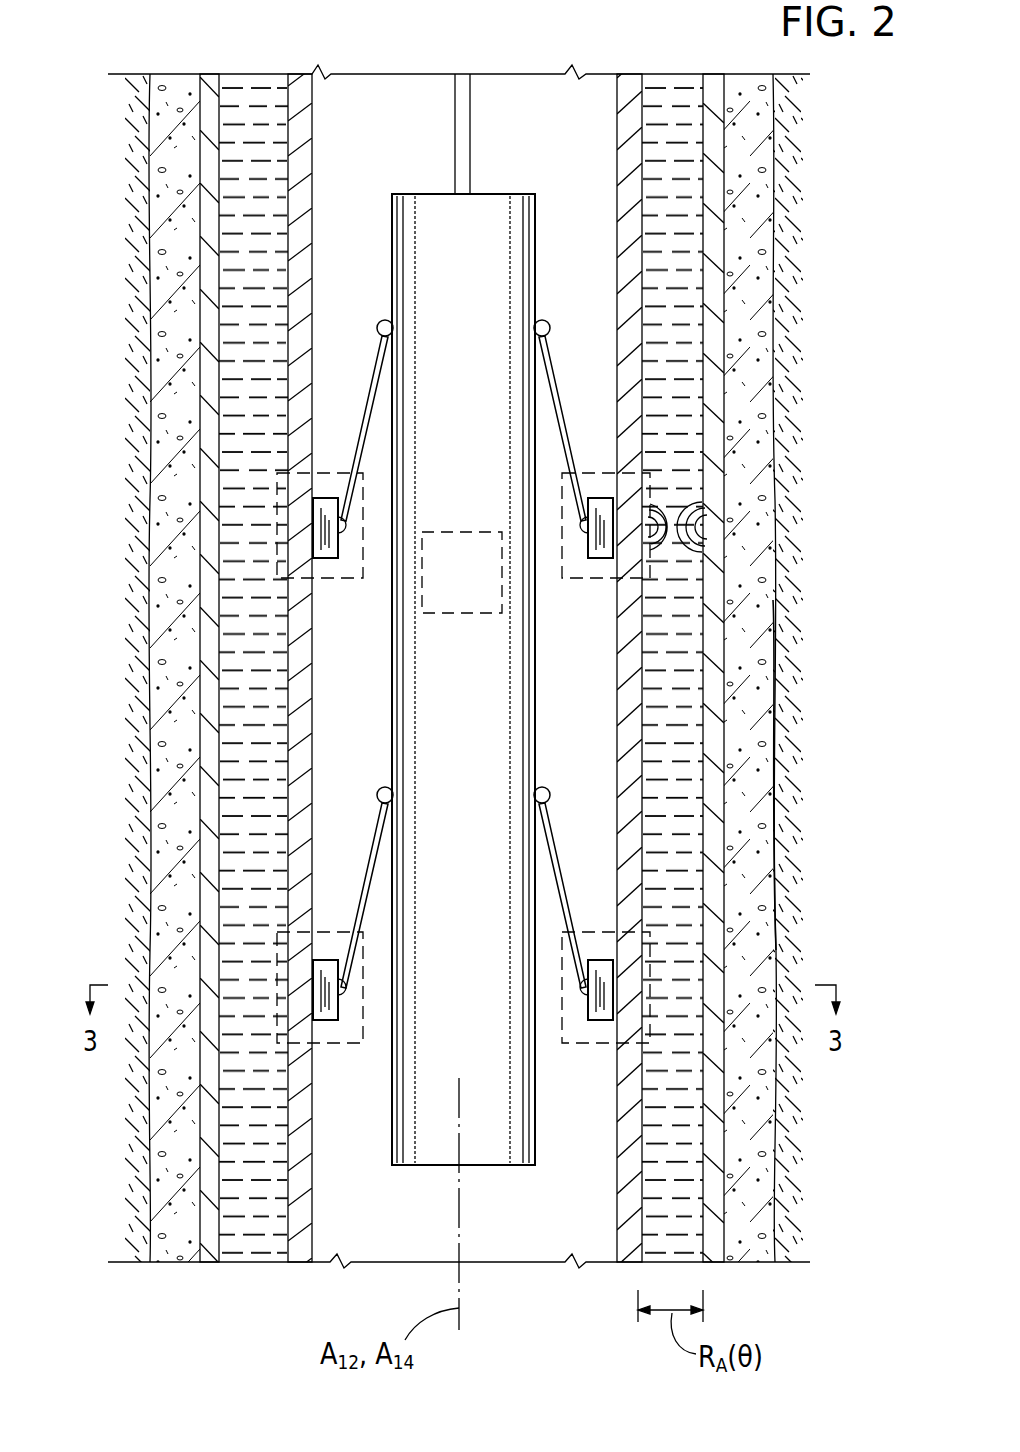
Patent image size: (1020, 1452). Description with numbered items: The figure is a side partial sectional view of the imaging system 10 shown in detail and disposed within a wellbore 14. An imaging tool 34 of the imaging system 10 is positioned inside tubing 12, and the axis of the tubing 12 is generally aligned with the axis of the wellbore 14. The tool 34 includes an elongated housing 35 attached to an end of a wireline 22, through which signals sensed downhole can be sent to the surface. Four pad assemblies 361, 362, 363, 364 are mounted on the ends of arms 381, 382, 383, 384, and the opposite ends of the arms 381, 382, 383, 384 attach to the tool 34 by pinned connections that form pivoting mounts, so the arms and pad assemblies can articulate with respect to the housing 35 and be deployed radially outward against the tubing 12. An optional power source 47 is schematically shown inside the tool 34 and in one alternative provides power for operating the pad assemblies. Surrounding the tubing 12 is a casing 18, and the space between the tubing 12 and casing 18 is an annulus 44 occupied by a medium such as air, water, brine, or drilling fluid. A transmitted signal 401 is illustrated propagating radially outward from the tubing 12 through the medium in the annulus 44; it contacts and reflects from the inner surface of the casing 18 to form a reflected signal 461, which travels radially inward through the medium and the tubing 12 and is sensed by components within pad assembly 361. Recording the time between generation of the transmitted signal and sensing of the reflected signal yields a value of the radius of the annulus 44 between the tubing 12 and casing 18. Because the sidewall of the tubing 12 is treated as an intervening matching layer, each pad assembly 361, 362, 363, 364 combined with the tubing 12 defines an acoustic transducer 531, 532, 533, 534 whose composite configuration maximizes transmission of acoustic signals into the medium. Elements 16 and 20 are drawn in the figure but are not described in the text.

The imaging system 10 is at (198, 60).
The tubing 12 is at (630, 140).
The wellbore 14 is at (236, 1275).
The formation 16 is at (790, 262).
The casing 18 is at (722, 735).
The cement 20 is at (745, 300).
The wireline 22 is at (468, 141).
The imaging tool 34 is at (524, 227).
The elongated housing 35 is at (478, 720).
The pad assembly 361 is at (604, 558).
The pad assembly 362 is at (318, 535).
The pad assembly 363 is at (612, 1023).
The pad assembly 364 is at (318, 1021).
The arm 381 is at (552, 372).
The arm 382 is at (373, 370).
The arm 383 is at (552, 840).
The arm 384 is at (373, 840).
The transmitted signal 401 is at (672, 552).
The annulus 44 is at (680, 228).
The reflected signal 461 is at (700, 495).
The power source 47 is at (458, 532).
The acoustic transducer 531 is at (650, 482).
The acoustic transducer 532 is at (277, 488).
The acoustic transducer 533 is at (652, 955).
The acoustic transducer 534 is at (277, 945).